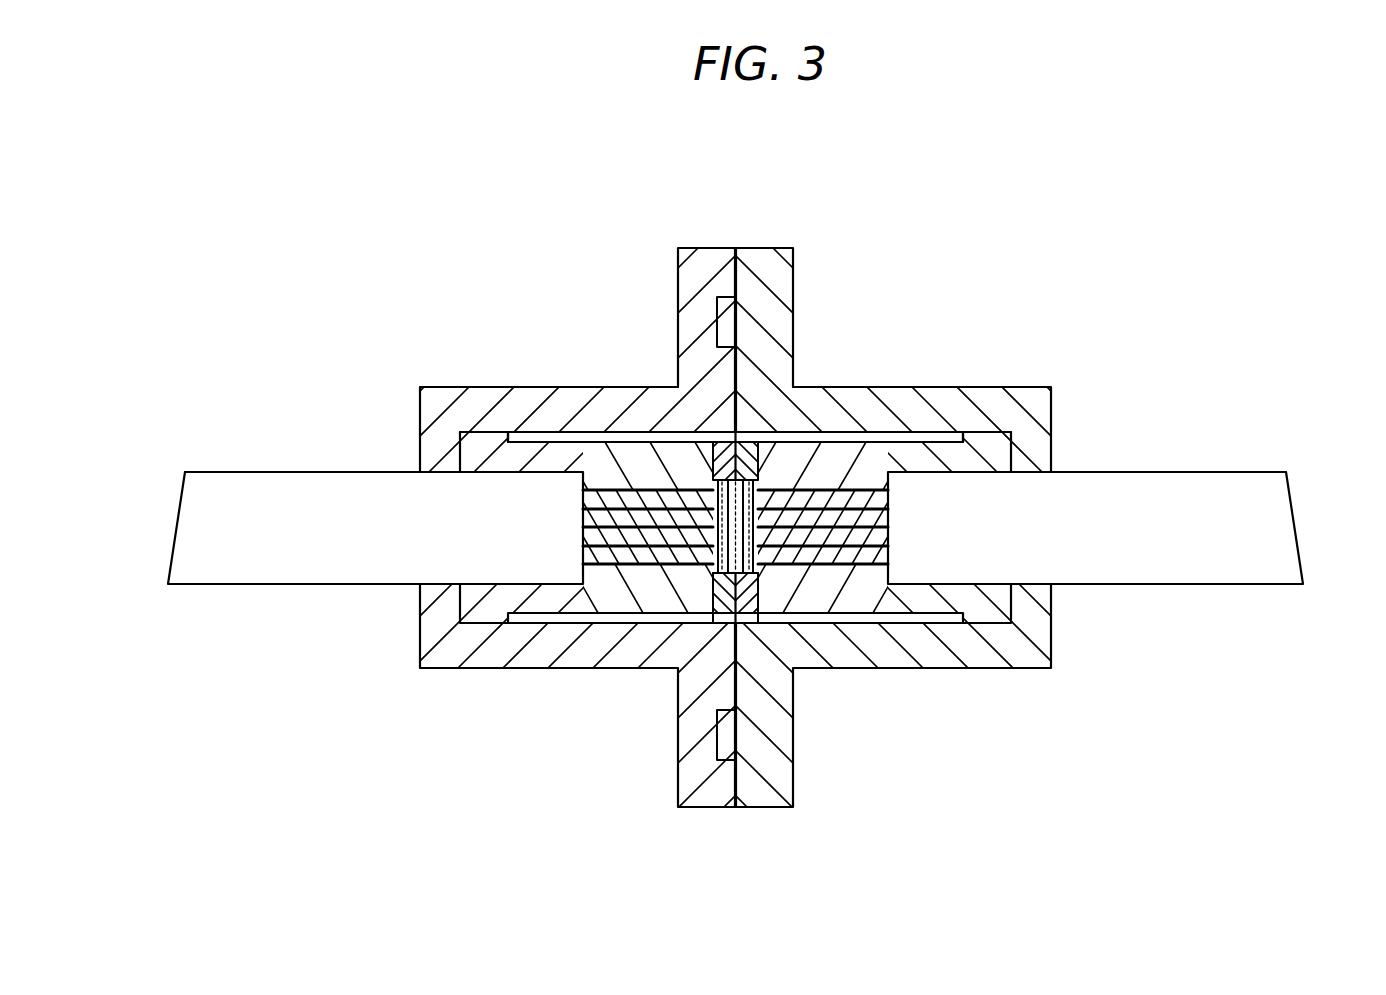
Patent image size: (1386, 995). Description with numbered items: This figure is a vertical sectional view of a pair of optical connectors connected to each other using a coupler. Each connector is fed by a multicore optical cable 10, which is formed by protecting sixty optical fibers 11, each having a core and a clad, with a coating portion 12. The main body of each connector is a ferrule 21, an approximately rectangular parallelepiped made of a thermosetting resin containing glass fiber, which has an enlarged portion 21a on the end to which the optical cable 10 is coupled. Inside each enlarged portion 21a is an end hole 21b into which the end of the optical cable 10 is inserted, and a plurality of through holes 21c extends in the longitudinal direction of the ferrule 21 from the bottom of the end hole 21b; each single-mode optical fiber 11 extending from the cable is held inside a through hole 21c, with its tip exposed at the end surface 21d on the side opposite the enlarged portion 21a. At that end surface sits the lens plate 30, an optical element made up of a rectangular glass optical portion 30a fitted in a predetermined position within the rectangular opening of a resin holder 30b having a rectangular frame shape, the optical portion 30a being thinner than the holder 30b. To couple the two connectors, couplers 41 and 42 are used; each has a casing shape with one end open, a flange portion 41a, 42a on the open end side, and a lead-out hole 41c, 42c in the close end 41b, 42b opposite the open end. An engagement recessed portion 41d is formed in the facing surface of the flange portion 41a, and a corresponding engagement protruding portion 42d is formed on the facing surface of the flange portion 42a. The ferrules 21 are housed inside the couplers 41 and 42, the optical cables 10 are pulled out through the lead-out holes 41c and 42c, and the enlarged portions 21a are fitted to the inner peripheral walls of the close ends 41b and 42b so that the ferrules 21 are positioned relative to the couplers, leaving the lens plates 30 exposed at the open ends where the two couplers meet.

The optical cable 10 is at (200, 530).
The optical fiber 11 is at (655, 580).
The coating portion 12 is at (235, 472).
The ferrule 21 is at (540, 618).
The enlarged portion 21a is at (497, 445).
The end hole 21b is at (490, 492).
The through hole 21c is at (618, 470).
The end surface 21d is at (712, 440).
The lens plate 30 is at (775, 420).
The optical portion 30a is at (712, 640).
The holder 30b is at (713, 605).
The coupler 41 is at (425, 390).
The flange portion 41a is at (705, 248).
The close end 41b is at (463, 602).
The lead-out hole 41c is at (430, 560).
The engagement recessed portion 41d is at (718, 340).
The coupler 42 is at (1048, 388).
The flange portion 42a is at (763, 248).
The close end 42b is at (1010, 625).
The lead-out hole 42c is at (1045, 550).
The engagement protruding portion 42d is at (718, 300).